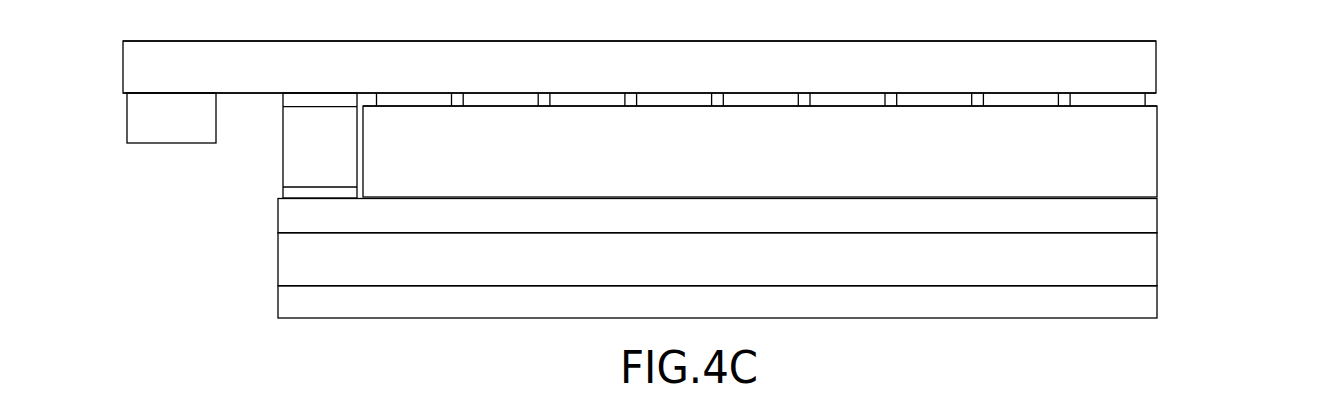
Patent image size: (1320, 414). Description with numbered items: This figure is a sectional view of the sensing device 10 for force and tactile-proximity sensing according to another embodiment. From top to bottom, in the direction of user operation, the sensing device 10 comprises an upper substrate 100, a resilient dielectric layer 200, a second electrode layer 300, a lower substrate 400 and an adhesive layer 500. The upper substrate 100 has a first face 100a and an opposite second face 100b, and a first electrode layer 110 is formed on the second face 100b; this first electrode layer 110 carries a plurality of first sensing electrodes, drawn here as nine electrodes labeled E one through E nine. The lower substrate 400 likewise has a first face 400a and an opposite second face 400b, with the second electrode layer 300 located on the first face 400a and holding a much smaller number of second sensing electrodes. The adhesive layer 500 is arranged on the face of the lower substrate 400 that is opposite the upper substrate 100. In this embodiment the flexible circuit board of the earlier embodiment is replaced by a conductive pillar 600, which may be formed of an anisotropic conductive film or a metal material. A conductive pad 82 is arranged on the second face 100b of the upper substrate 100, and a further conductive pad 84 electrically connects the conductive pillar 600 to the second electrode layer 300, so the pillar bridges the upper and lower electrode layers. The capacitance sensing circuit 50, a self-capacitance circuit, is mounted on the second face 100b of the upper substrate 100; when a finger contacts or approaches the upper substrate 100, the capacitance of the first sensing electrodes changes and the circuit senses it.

The sensing device 10 is at (652, 19).
The capacitance sensing circuit 50 is at (171, 143).
The conductive pad 82 is at (300, 103).
The conductive pad 84 is at (300, 195).
The conductive pillar 600 is at (293, 147).
The upper substrate 100 is at (760, 50).
The first face of upper substrate 100a is at (995, 40).
The second face of upper substrate 100b is at (1065, 106).
The first electrode layer 110 is at (1145, 99).
The resilient dielectric layer 200 is at (1147, 152).
The second electrode layer 300 is at (1157, 213).
The lower substrate 400 is at (1147, 258).
The first face of lower substrate 400a is at (1133, 232).
The second face of lower substrate 400b is at (1132, 285).
The adhesive layer 500 is at (1147, 303).